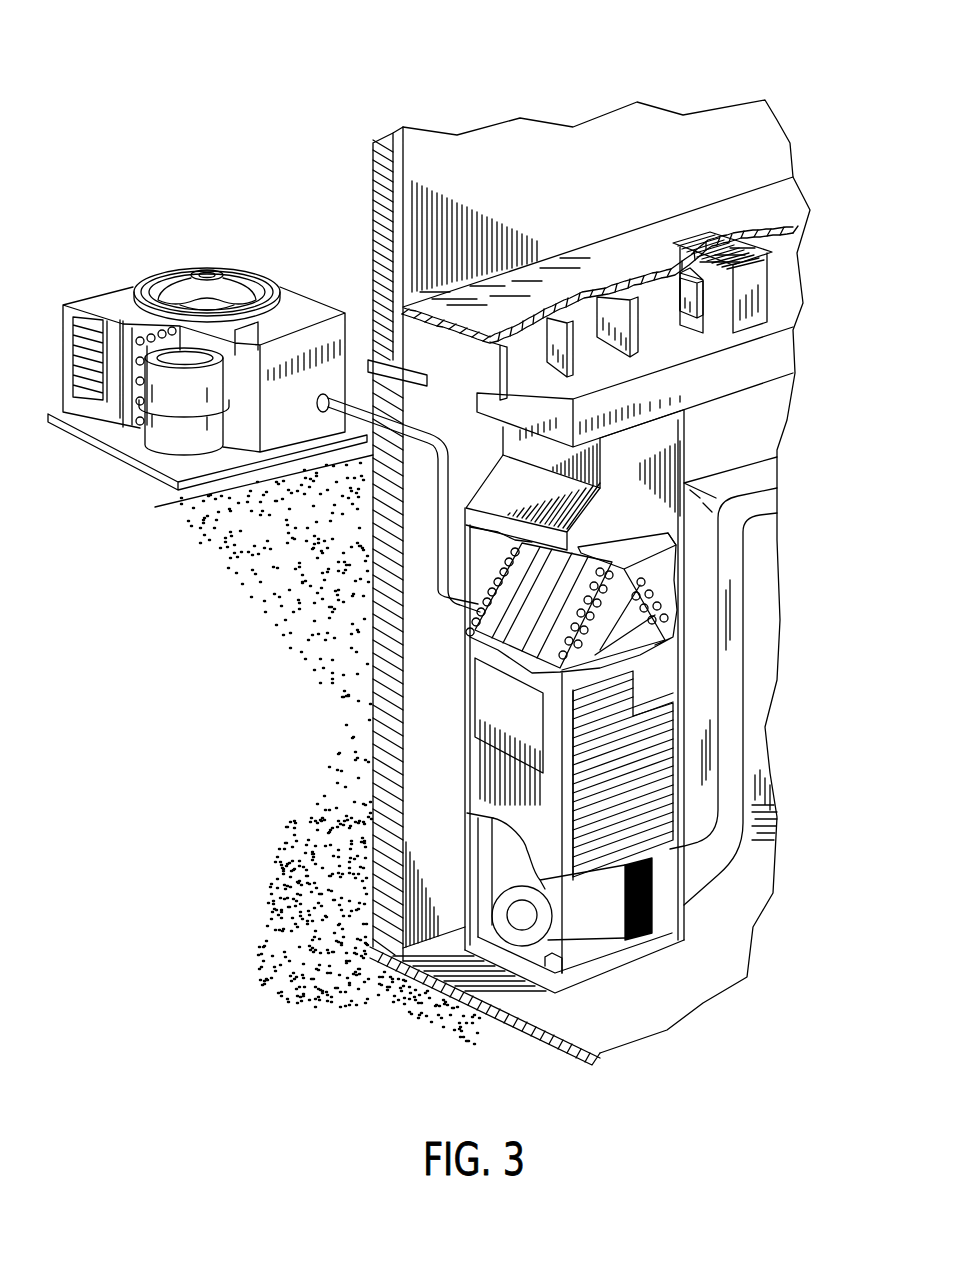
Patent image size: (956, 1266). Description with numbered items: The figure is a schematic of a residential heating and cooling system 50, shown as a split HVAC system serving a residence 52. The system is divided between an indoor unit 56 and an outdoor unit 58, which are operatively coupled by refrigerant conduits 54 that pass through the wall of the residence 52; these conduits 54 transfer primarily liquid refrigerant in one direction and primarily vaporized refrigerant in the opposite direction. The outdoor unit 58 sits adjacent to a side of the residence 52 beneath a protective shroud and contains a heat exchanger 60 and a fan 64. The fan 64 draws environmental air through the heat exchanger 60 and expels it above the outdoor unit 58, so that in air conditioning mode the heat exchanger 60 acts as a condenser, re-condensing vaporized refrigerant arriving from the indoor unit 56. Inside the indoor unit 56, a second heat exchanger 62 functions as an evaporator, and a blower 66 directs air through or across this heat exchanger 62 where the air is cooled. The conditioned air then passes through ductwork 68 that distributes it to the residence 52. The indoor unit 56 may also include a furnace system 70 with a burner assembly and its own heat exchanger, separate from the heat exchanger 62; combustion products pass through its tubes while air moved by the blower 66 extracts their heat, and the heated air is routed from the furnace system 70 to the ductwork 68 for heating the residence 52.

The residential heating and cooling system 50 is at (207, 100).
The residence 52 is at (505, 148).
The refrigerant conduits 54 is at (438, 517).
The indoor unit 56 is at (448, 755).
The outdoor unit 58 is at (168, 259).
The heat exchanger 60 is at (140, 337).
The heat exchanger 62 is at (525, 632).
The fan 64 is at (225, 282).
The blower 66 is at (516, 938).
The ductwork 68 is at (748, 332).
The furnace system 70 is at (490, 668).